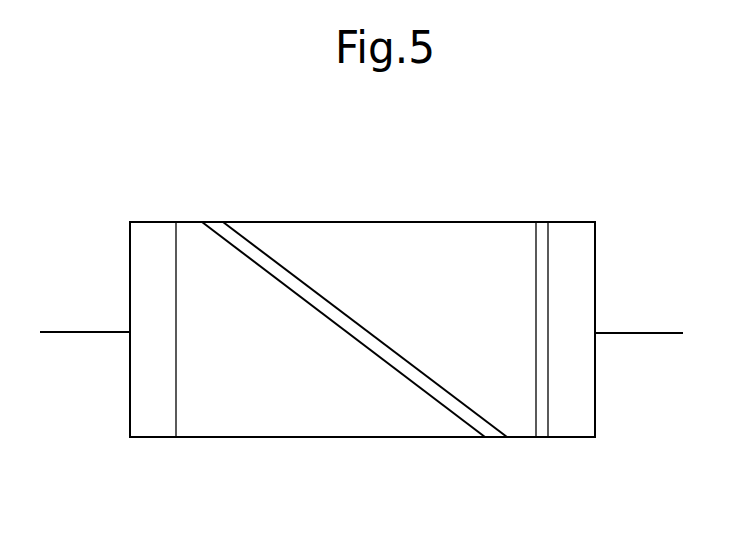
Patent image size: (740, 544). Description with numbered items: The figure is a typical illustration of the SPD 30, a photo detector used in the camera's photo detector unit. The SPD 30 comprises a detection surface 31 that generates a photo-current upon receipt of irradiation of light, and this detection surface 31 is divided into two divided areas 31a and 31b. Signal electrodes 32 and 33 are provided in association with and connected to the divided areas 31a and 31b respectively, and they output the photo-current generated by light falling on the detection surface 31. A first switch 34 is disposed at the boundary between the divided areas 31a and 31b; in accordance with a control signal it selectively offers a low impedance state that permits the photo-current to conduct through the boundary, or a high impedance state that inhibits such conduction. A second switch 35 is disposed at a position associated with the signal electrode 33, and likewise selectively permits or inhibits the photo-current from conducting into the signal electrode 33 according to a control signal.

The SPD 30 is at (181, 196).
The detection surface 31 is at (407, 215).
The divided area 31a is at (253, 430).
The divided area 31b is at (500, 243).
The signal electrode 32 is at (156, 430).
The signal electrode 33 is at (582, 430).
The first switch 34 is at (391, 360).
The second switch 35 is at (543, 430).